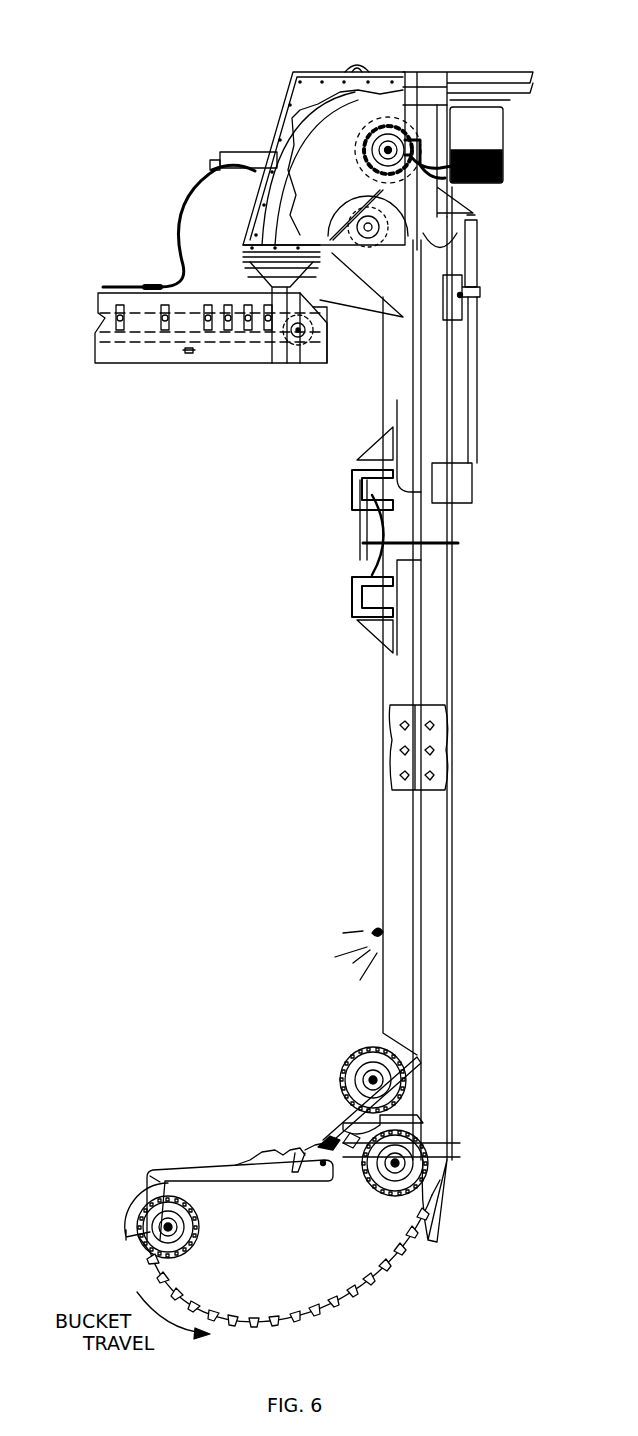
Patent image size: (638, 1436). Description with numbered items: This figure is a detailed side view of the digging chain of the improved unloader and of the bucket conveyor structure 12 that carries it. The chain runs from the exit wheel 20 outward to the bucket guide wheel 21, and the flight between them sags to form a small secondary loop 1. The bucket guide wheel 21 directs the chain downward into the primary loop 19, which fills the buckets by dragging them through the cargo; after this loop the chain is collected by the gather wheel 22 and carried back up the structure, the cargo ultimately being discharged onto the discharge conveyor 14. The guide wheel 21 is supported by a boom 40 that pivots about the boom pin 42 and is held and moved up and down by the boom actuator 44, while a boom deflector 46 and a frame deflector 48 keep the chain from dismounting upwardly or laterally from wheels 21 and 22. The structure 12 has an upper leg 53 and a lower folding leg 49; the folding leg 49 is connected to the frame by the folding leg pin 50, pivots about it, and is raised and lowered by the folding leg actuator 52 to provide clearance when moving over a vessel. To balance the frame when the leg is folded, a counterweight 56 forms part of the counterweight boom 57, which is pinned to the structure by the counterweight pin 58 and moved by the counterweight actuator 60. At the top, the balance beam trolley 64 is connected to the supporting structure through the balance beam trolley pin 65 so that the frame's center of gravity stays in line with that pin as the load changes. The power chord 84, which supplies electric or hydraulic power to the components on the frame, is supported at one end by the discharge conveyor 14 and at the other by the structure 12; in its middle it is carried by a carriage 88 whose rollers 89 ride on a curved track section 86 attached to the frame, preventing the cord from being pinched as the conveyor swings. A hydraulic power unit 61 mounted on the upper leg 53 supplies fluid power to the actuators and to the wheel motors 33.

The secondary loop 1 is at (273, 1152).
The bucket conveyor structure 12 is at (293, 72).
The discharge conveyor 14 is at (132, 363).
The primary loop 19 is at (267, 1320).
The exit wheel 20 is at (353, 1053).
The bucket guide wheel 21 is at (203, 1242).
The gather wheel 22 is at (393, 1200).
The wheel motors 33 is at (392, 128).
The boom 40 is at (187, 1163).
The boom pin 42 is at (323, 1165).
The boom actuator 44 is at (340, 1118).
The boom deflector 46 is at (128, 1207).
The frame deflector 48 is at (433, 1202).
The folding leg 49 is at (453, 633).
The folding leg pin 50 is at (360, 547).
The folding leg actuator 52 is at (357, 520).
The upper leg 53 is at (453, 523).
The counterweight 56 is at (473, 488).
The counterweight boom 57 is at (472, 400).
The counterweight pin 58 is at (467, 295).
The counterweight actuator 60 is at (480, 250).
The hydraulic power unit 61 is at (503, 175).
The balance beam trolley 64 is at (350, 65).
The balance beam trolley pin 65 is at (365, 64).
The power chord 84 is at (187, 200).
The curved track section 86 is at (257, 152).
The carriage 88 is at (210, 165).
The rollers 89 is at (213, 158).